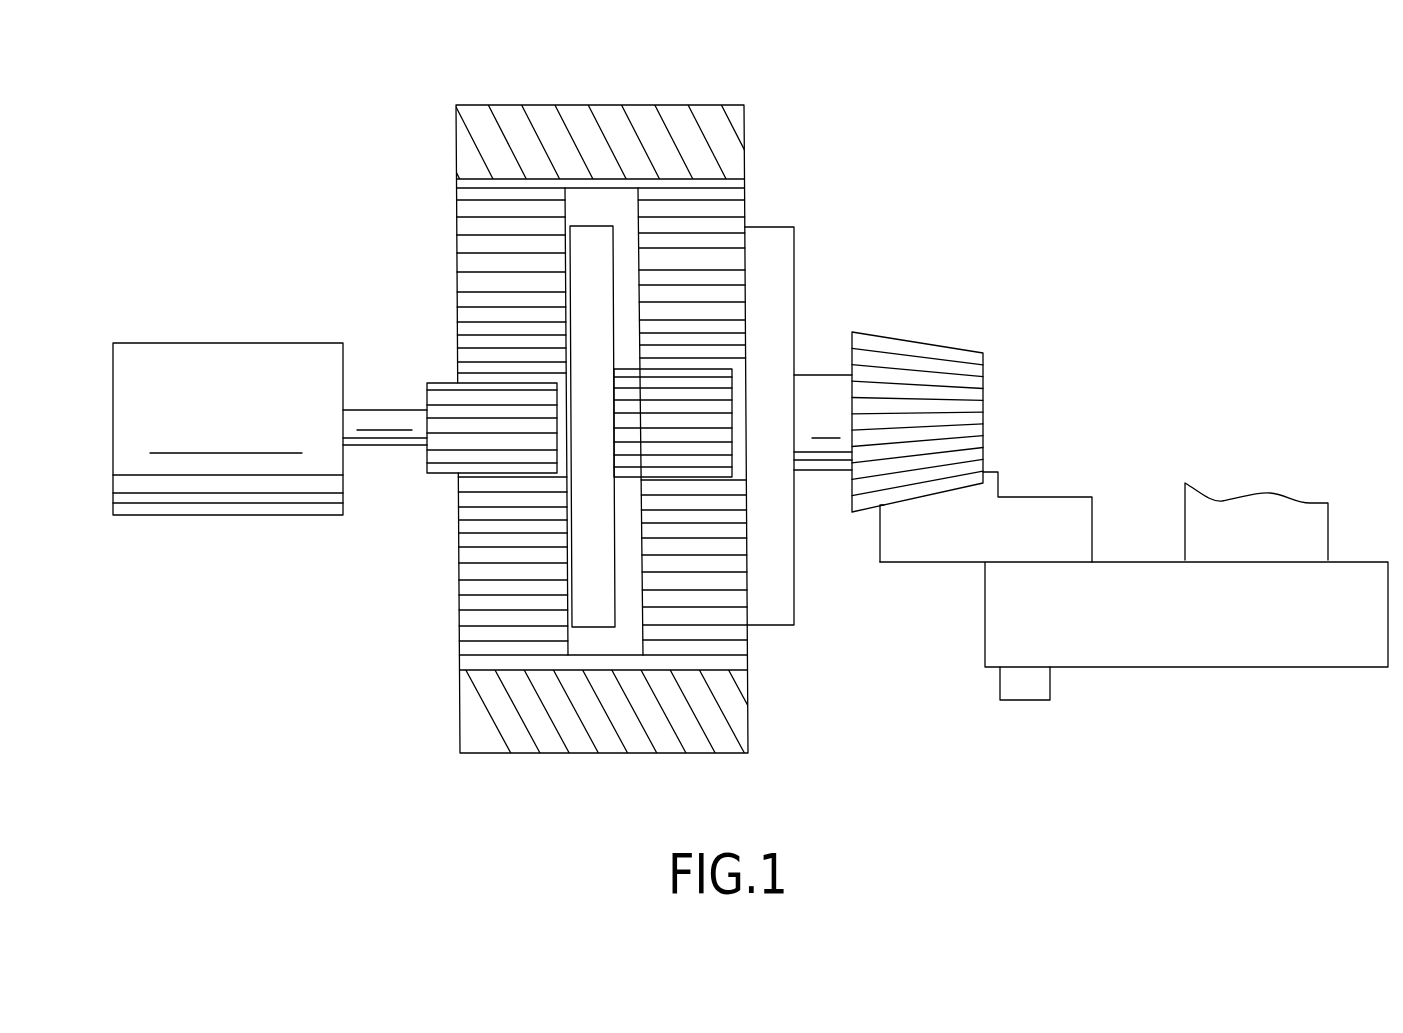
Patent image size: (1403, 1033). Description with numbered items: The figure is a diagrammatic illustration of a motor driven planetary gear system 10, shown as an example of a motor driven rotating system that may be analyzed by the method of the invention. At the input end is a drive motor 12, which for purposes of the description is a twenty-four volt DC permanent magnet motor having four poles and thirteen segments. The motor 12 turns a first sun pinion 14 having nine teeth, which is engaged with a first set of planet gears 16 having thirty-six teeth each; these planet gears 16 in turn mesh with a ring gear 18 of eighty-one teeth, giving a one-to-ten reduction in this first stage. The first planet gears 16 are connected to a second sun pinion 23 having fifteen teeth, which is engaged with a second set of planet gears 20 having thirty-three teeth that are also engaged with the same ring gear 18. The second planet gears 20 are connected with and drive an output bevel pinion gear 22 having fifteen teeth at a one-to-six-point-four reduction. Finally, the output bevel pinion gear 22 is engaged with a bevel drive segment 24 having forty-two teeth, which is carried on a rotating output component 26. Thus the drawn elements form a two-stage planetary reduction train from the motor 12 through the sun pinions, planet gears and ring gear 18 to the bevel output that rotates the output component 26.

The motor driven planetary gear system 10 is at (321, 301).
The drive motor 12 is at (178, 495).
The first sun pinion 14 is at (443, 405).
The first set of planet gears 16 is at (473, 255).
The ring gear 18 is at (620, 106).
The second set of planet gears 20 is at (743, 222).
The output bevel pinion gear 22 is at (901, 343).
The second sun pinion 23 is at (718, 437).
The bevel drive segment 24 is at (1037, 497).
The rotating output component 26 is at (1100, 671).